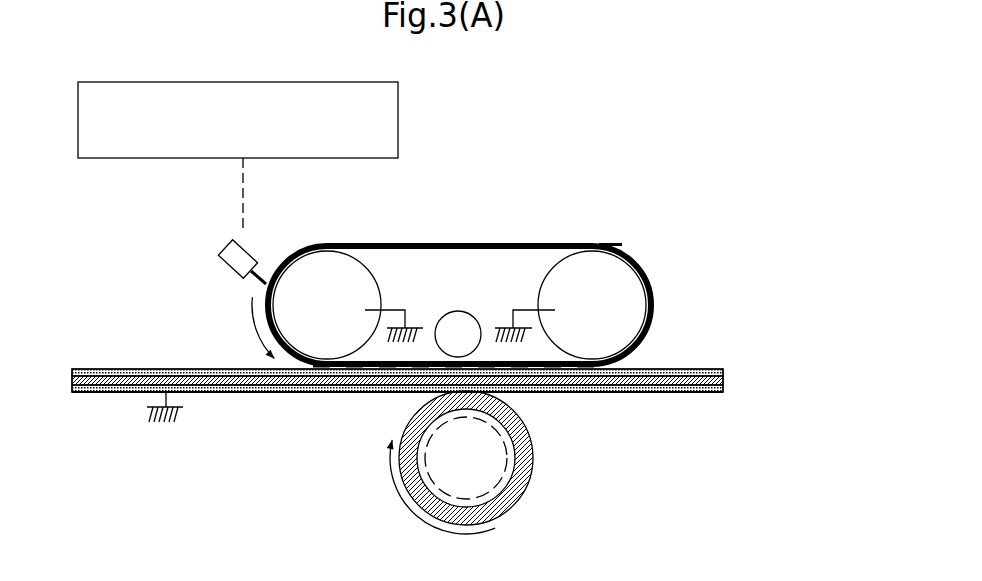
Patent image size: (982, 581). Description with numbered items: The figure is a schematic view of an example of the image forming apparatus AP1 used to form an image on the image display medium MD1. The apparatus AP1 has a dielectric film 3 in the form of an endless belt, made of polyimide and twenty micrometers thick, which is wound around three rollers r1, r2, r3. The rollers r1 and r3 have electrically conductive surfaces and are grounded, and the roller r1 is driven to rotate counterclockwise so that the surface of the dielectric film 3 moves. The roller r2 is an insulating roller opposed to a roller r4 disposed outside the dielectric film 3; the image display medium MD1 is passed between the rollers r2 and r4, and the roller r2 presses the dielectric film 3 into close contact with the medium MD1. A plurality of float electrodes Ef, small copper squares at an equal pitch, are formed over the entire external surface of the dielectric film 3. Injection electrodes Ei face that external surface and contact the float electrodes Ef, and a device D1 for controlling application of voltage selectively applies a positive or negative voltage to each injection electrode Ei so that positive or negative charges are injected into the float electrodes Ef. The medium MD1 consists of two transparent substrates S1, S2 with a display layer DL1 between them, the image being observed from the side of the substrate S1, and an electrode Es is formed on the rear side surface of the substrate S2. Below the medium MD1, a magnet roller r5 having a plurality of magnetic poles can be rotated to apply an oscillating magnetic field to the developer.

The device for controlling application of voltage D1 is at (400, 125).
The image forming apparatus AP1 is at (643, 167).
The dielectric film 3 is at (532, 243).
The float electrodes Ef is at (352, 247).
The roller r1 is at (365, 280).
The roller r2 is at (458, 320).
The roller r3 is at (543, 282).
The injection electrodes Ei is at (255, 280).
The image display medium MD1 is at (437, 373).
The substrate S1 is at (723, 370).
The display layer DL1 is at (726, 378).
The substrate S2 is at (723, 390).
The electrode Es is at (725, 392).
The roller r4 is at (407, 428).
The magnet roller r5 is at (512, 452).